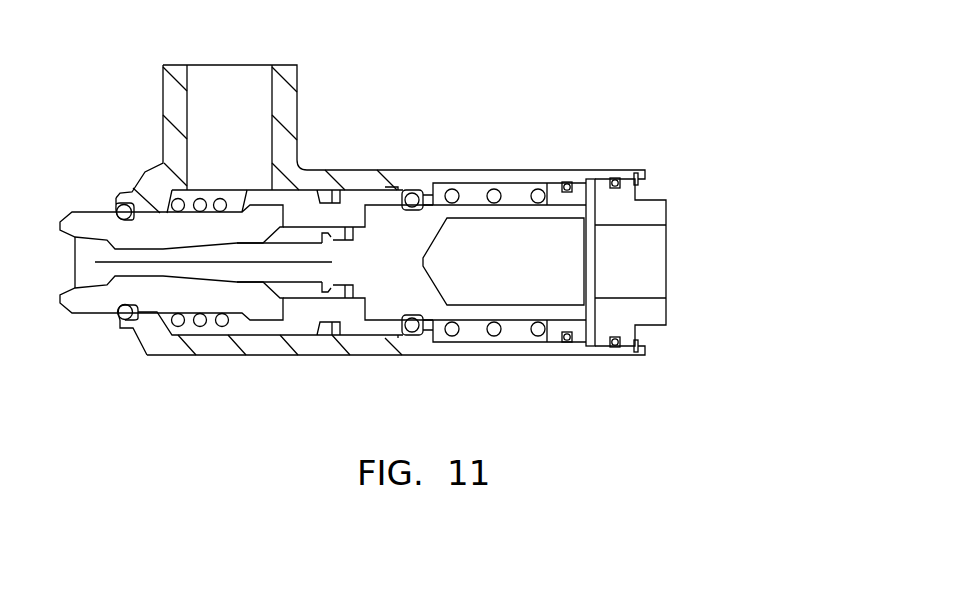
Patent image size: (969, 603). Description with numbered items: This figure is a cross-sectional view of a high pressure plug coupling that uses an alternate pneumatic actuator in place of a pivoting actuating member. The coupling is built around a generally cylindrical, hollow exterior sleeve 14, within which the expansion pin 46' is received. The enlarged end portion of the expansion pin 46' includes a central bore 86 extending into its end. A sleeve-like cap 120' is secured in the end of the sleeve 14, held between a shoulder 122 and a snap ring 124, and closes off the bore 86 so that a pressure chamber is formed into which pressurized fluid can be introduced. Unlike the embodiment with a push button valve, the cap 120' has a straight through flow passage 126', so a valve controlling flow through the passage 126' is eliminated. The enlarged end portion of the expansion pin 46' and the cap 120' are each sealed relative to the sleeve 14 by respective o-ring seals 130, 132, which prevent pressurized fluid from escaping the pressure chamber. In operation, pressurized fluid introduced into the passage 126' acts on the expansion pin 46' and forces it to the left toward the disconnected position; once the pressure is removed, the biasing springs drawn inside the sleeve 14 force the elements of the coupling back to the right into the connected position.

The exterior sleeve 14 is at (512, 170).
The expansion pin 46' is at (237, 186).
The central bore 86 is at (457, 250).
The sleeve-like cap 120' is at (714, 258).
The shoulder 122 is at (594, 344).
The snap ring 124 is at (638, 185).
The straight through flow passage 126' is at (719, 261).
The o-ring seal 130 is at (567, 184).
The o-ring seal 132 is at (617, 180).